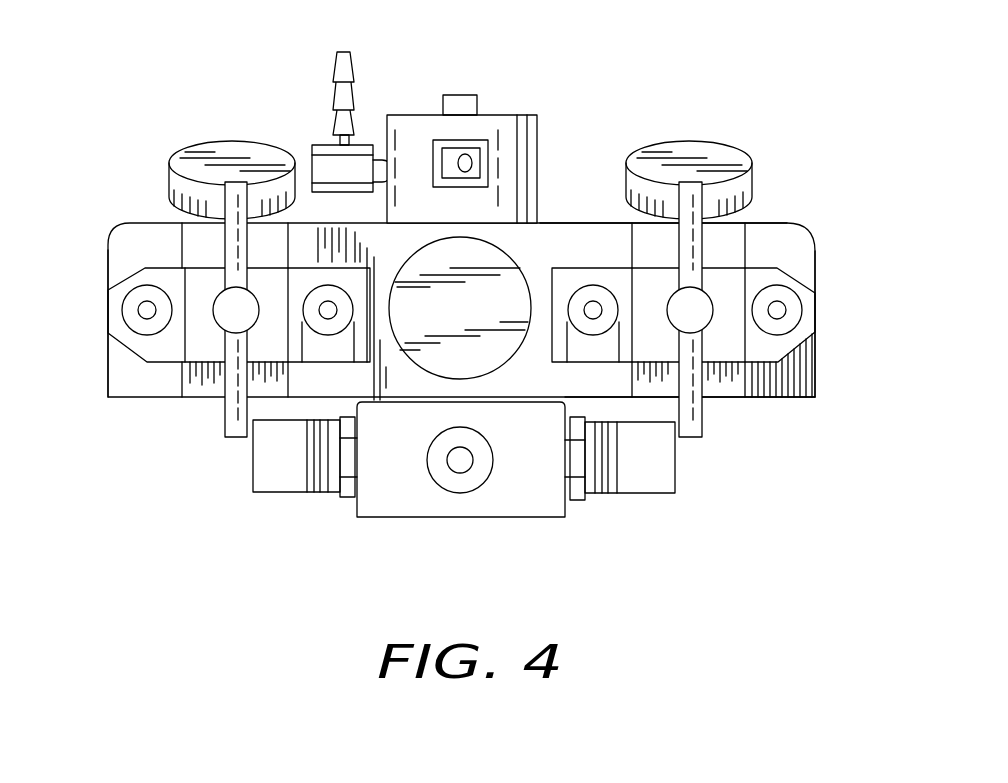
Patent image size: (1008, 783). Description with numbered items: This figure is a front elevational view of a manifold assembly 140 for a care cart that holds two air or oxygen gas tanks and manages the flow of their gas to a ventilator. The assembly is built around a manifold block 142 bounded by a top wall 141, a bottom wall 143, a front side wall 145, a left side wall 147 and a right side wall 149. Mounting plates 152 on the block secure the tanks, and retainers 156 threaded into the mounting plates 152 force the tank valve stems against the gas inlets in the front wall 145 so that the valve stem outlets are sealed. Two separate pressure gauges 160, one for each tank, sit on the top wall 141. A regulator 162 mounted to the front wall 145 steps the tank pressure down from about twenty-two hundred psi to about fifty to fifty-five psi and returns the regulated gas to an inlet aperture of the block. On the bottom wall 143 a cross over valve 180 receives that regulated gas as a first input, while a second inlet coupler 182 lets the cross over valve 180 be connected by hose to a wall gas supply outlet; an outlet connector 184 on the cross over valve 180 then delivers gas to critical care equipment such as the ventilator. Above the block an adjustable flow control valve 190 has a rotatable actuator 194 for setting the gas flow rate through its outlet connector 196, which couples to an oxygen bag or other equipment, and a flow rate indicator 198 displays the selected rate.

The manifold assembly 140 is at (841, 176).
The top wall 141 is at (580, 225).
The manifold block 142 is at (118, 250).
The bottom wall 143 is at (790, 400).
The front side wall 145 is at (313, 232).
The left side wall 147 is at (108, 278).
The right side wall 149 is at (815, 282).
The mounting plates 152 is at (162, 348).
The retainers 156 is at (232, 427).
The pressure gauges 160 is at (212, 158).
The regulator 162 is at (478, 296).
The cross over valve 180 is at (401, 489).
The second inlet coupler 182 is at (648, 473).
The outlet connector 184 is at (277, 478).
The adjustable flow control valve 190 is at (526, 85).
The rotatable actuator 194 is at (462, 102).
The outlet connector 196 is at (343, 62).
The flow rate indicator 198 is at (446, 180).